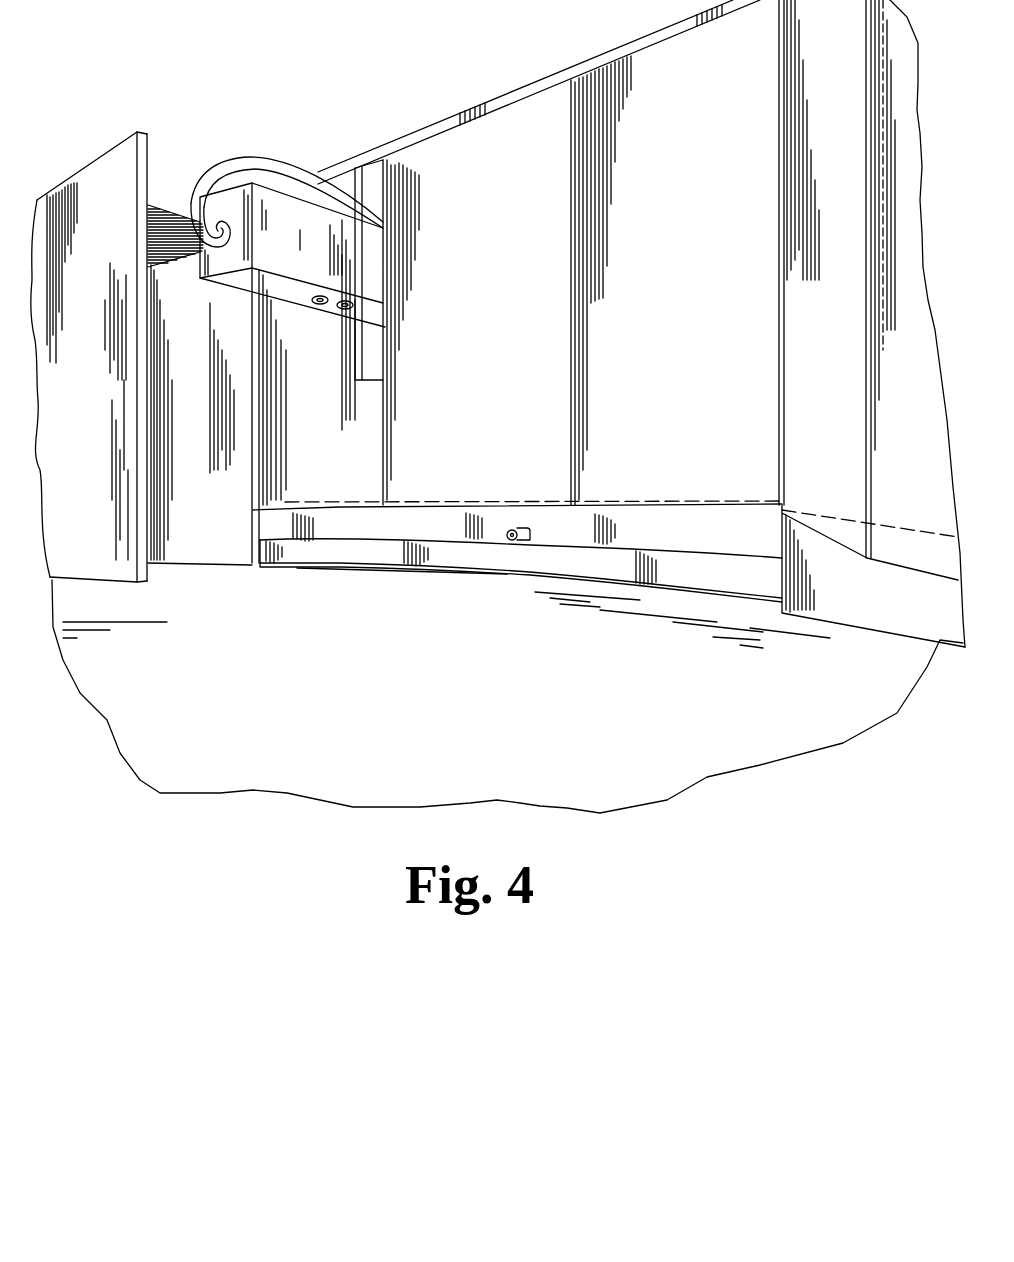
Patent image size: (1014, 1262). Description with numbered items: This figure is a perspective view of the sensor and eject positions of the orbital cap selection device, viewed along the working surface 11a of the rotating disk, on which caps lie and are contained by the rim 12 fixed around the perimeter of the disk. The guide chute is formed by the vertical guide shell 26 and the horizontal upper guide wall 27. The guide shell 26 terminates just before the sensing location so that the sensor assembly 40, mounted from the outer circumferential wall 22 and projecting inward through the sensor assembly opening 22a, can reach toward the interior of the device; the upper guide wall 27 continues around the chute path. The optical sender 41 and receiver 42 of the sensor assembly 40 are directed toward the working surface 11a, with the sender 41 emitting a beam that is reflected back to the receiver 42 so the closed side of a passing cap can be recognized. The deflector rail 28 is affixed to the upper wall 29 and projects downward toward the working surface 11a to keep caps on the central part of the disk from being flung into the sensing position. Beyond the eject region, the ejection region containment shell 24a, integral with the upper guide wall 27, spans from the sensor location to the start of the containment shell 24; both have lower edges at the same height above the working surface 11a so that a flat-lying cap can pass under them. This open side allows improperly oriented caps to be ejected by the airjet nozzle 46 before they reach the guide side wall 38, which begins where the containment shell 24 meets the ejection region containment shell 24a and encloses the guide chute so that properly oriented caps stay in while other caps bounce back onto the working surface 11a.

The deflector rail 28 is at (90, 389).
The guide shell 26 is at (202, 389).
The outer circumferential wall 22 is at (301, 389).
The sensor assembly opening 22a is at (365, 190).
The ejection region containment shell 24a is at (552, 346).
The containment shell 24 is at (827, 346).
The upper wall 29 is at (168, 216).
The sensor assembly 40 is at (270, 205).
The sender 41 is at (321, 305).
The receiver 42 is at (351, 310).
The upper guide wall 27 is at (318, 508).
The rim 12 is at (624, 570).
The airjet nozzle 46 is at (514, 541).
The guide side wall 38 is at (882, 599).
The working surface 11a is at (392, 659).